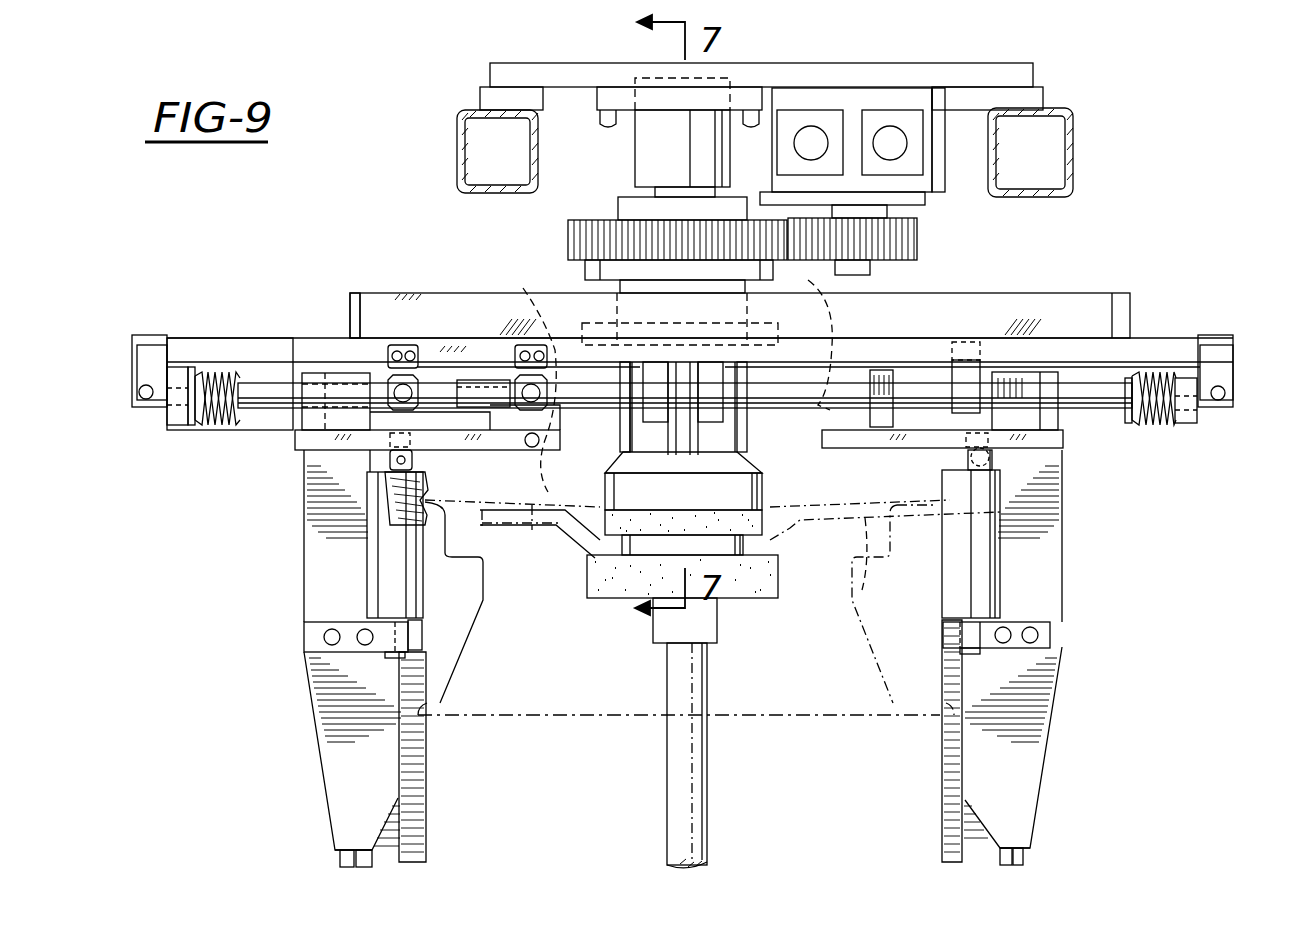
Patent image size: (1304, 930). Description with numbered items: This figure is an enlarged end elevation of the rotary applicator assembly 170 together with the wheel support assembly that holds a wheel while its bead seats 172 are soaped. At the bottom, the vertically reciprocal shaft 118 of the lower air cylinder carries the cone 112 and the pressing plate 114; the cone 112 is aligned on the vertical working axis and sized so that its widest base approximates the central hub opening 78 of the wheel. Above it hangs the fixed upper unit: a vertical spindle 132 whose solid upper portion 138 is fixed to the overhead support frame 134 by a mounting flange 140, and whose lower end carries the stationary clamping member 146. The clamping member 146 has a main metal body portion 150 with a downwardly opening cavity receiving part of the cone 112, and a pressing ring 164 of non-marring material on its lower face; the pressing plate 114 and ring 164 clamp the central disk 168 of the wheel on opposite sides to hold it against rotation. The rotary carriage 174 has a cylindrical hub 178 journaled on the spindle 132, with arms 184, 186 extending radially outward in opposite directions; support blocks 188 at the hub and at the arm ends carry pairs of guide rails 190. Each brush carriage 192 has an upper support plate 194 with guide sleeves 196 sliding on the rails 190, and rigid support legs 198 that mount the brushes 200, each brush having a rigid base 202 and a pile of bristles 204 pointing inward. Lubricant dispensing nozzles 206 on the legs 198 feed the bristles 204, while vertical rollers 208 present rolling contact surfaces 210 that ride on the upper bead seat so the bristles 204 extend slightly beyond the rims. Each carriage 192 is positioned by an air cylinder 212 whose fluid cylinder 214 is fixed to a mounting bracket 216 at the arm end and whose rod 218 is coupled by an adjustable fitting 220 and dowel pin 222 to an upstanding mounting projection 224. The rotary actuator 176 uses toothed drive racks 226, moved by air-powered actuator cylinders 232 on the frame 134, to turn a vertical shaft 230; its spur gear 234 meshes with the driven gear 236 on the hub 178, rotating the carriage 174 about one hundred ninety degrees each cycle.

The central hub opening 78 is at (605, 580).
The cone 112 is at (745, 605).
The pressing plate 114 is at (778, 580).
The vertically reciprocal shaft 118 is at (665, 758).
The vertical spindle 132 is at (725, 120).
The overhead support frame 134 is at (975, 77).
The solid upper portion 138 is at (640, 145).
The mounting flange 140 is at (605, 90).
The clamping member 146 is at (775, 478).
The main metal body portion 150 is at (765, 518).
The pressing ring 164 is at (760, 530).
The central disk 168 is at (885, 566).
The rotary applicator assembly 170 is at (1195, 188).
The bead seats 172 is at (430, 500).
The rotary carriage 174 is at (1040, 285).
The rotary actuator 176 is at (955, 115).
The cylindrical hub 178 is at (635, 296).
The arm 184 is at (335, 345).
The arm 186 is at (1090, 340).
The support blocks 188 is at (175, 410).
The guide rails 190 is at (275, 388).
The brush carriage 192 is at (295, 492).
The upper support plate 194 is at (296, 440).
The guide sleeves 196 is at (360, 378).
The support legs 198 is at (304, 560).
The brushes 200 is at (390, 868).
The rigid base 202 is at (340, 862).
The bristles 204 is at (428, 795).
The lubricant dispensing nozzles 206 is at (412, 452).
The vertical rollers 208 is at (345, 616).
The rolling contact surface 210 is at (422, 590).
The air cylinder 212 is at (242, 370).
The fluid cylinder 214 is at (210, 385).
The mounting brackets 216 is at (140, 355).
The rods 218 is at (435, 395).
The adjustable fitting 220 is at (830, 395).
The dowel pin 222 is at (526, 376).
The mounting projection 224 is at (692, 381).
The toothed drive racks 226 is at (815, 120).
The vertical shaft 230 is at (860, 203).
The air-powered actuator cylinders 232 is at (845, 125).
The spur gear 234 is at (918, 243).
The driven gear 236 is at (572, 235).